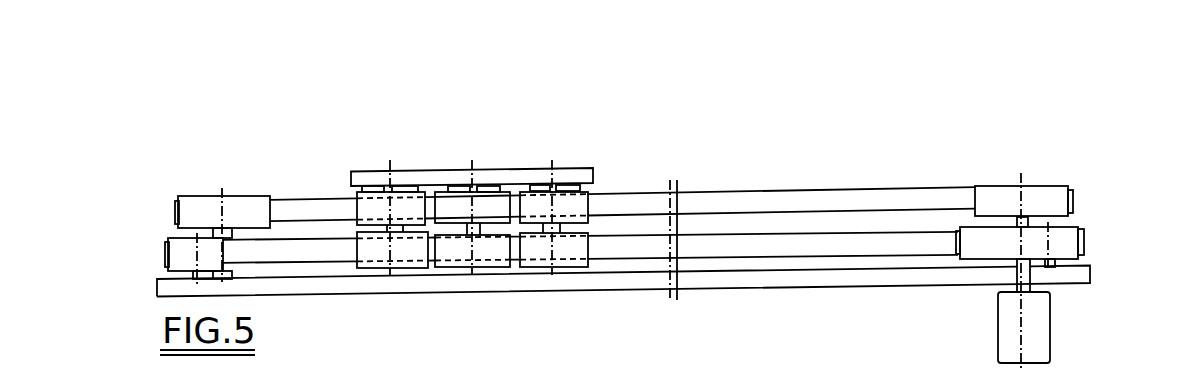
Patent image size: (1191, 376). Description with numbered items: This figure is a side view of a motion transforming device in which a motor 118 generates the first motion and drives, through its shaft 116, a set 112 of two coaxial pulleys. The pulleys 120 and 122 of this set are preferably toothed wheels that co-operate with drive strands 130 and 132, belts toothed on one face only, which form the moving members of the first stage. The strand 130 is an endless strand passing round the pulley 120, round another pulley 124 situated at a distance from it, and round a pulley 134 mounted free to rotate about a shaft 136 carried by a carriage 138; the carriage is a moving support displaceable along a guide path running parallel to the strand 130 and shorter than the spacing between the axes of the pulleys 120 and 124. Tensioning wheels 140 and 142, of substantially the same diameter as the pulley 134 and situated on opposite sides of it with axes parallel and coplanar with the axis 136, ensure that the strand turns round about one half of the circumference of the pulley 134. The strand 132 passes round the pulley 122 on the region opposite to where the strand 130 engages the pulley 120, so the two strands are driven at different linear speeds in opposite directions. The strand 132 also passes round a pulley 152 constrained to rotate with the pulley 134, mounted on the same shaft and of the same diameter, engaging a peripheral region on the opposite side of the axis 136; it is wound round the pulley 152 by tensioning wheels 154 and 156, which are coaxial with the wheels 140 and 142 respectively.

The set of two coaxial pulleys 112 is at (1055, 165).
The shaft 116 is at (1023, 274).
The motor 118 is at (1033, 332).
The pulley 120 is at (1052, 183).
The pulley 122 is at (1088, 230).
The pulley 124 is at (188, 197).
The drive strand 130 is at (698, 203).
The drive strand 132 is at (748, 240).
The pulley 134 is at (450, 186).
The shaft 136 is at (472, 188).
The carriage 138 is at (506, 175).
The tensioning wheel 140 is at (363, 192).
The tensioning wheel 142 is at (568, 184).
The pulley 152 is at (418, 192).
The tensioning wheel 154 is at (360, 233).
The tensioning wheel 156 is at (591, 199).